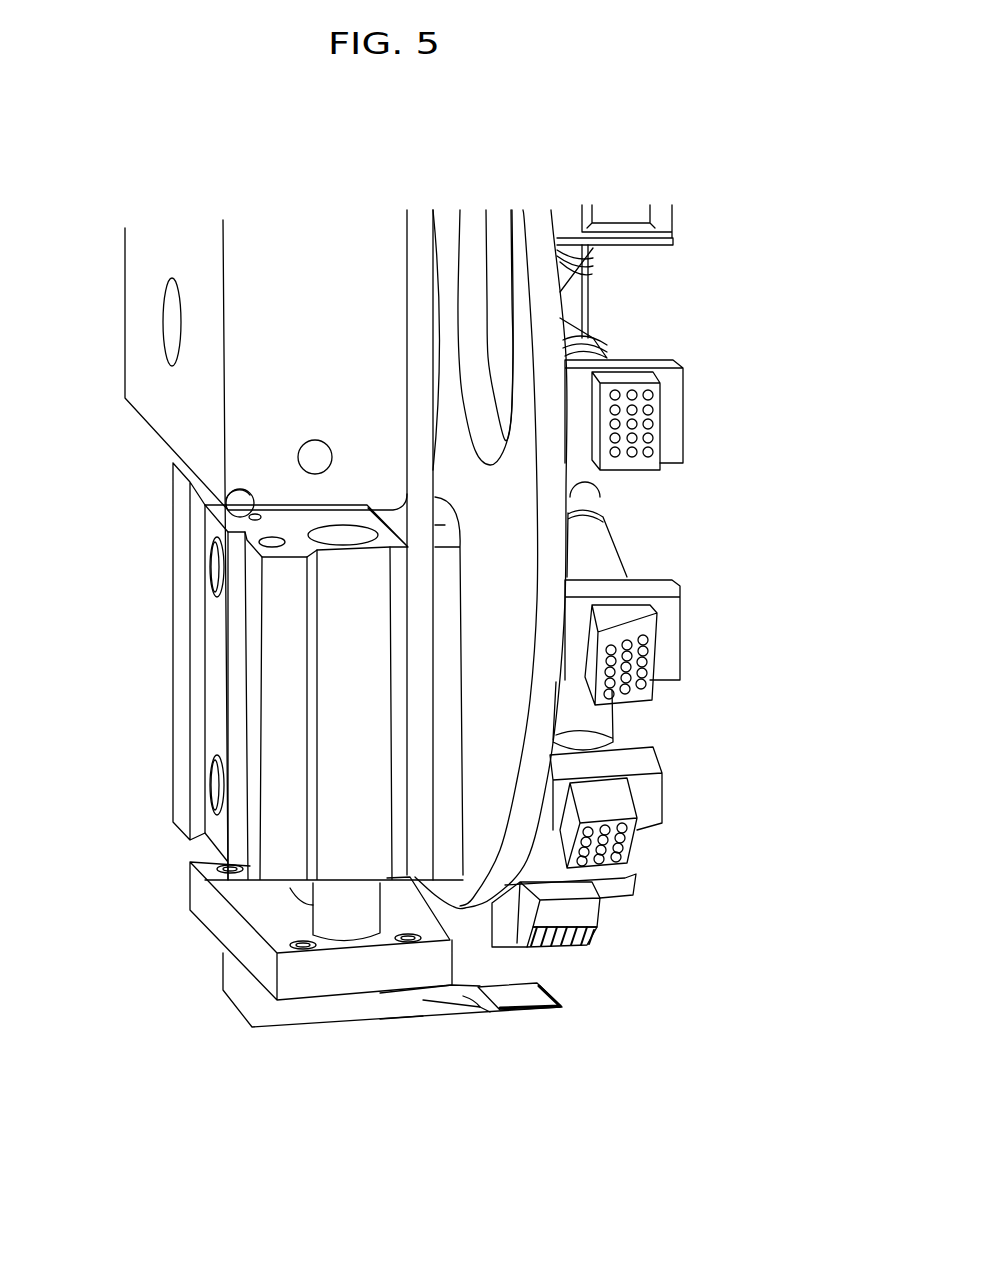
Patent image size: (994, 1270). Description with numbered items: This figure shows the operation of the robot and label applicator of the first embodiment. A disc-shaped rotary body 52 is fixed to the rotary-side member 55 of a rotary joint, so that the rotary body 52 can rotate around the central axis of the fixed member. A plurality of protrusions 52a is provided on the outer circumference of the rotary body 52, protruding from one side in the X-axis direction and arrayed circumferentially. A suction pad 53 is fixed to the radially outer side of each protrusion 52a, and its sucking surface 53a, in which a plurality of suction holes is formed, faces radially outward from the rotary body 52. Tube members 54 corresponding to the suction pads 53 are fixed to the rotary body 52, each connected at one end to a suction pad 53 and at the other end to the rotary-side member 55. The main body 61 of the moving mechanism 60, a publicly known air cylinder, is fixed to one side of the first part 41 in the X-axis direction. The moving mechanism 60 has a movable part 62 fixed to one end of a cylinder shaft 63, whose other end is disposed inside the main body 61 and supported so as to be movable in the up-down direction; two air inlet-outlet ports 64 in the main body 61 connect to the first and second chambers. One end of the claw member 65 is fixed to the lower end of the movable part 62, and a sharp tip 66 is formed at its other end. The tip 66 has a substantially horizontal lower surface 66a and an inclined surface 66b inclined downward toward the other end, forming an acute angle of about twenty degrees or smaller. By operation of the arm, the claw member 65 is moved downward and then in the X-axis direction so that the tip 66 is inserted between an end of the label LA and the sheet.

The first part 41 is at (415, 234).
The rotary body 52 is at (540, 215).
The protrusion 52a is at (683, 387).
The suction pad 53 is at (643, 373).
The sucking surface 53a is at (648, 423).
The tube member 54 is at (593, 338).
The rotary-side member 55 is at (578, 293).
The moving mechanism 60 is at (170, 523).
The main body 61 is at (173, 650).
The movable part 62 is at (263, 970).
The cylinder shaft 63 is at (325, 923).
The air inlet-outlet port 64 is at (210, 567).
The claw member 65 is at (310, 1027).
The tip 66 is at (447, 1012).
The lower surface 66a is at (397, 1022).
The inclined surface 66b is at (465, 997).
The label LA is at (543, 995).